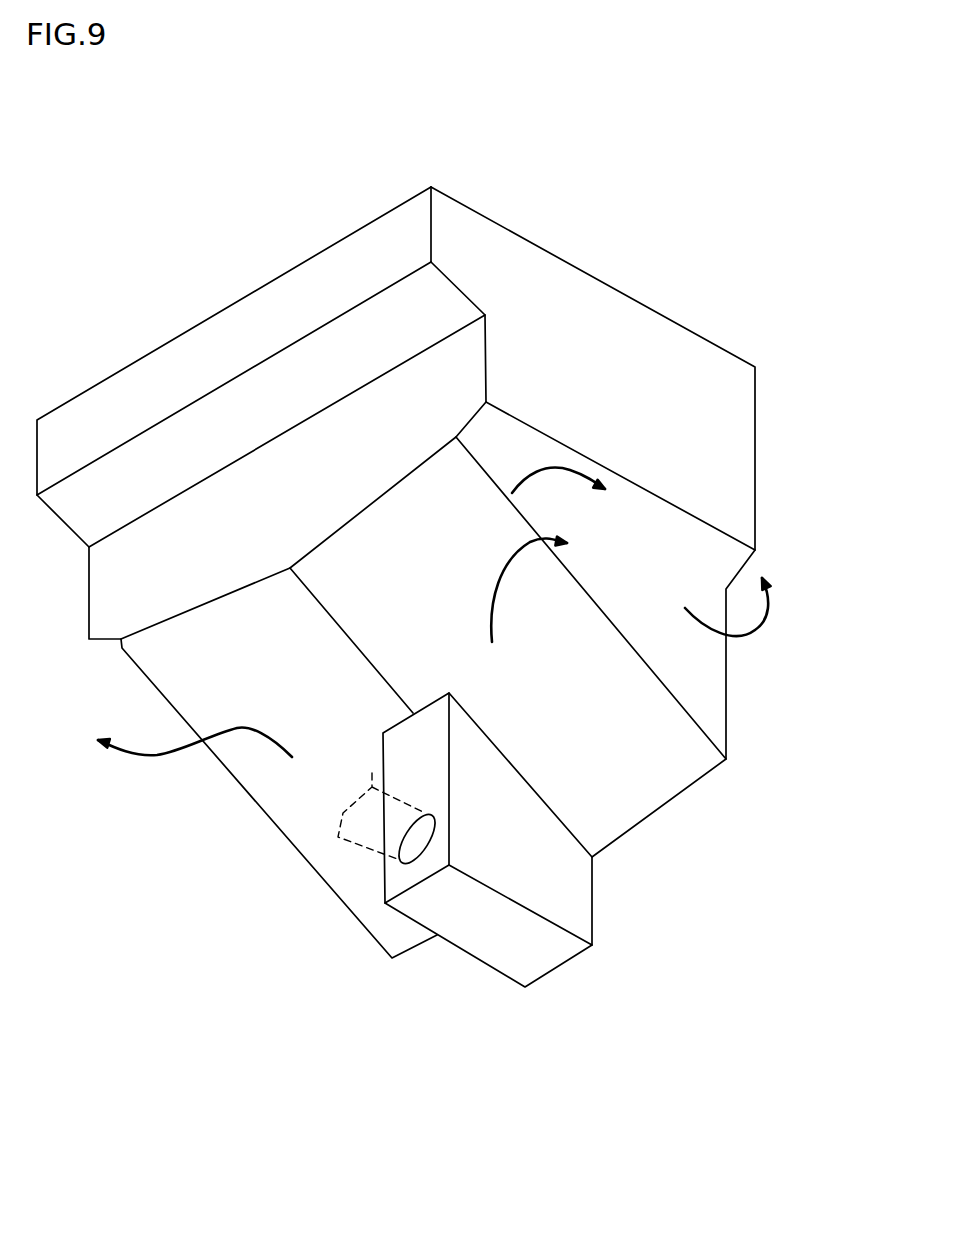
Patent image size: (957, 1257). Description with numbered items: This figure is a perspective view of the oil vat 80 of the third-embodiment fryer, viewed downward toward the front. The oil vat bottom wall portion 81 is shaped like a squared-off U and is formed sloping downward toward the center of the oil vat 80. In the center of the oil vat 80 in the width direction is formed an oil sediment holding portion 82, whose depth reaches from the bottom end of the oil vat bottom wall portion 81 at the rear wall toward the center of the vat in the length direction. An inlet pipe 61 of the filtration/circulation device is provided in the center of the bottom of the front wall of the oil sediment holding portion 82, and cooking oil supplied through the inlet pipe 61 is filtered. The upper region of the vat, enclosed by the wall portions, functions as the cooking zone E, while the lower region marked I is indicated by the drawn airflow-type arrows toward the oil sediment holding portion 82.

The oil vat 80 is at (542, 225).
The oil vat bottom wall portion 81 is at (563, 695).
The oil sediment holding portion 82 is at (477, 847).
The inlet pipe 61 is at (362, 840).
The cooking zone E is at (663, 435).
The intake air flow I is at (542, 883).